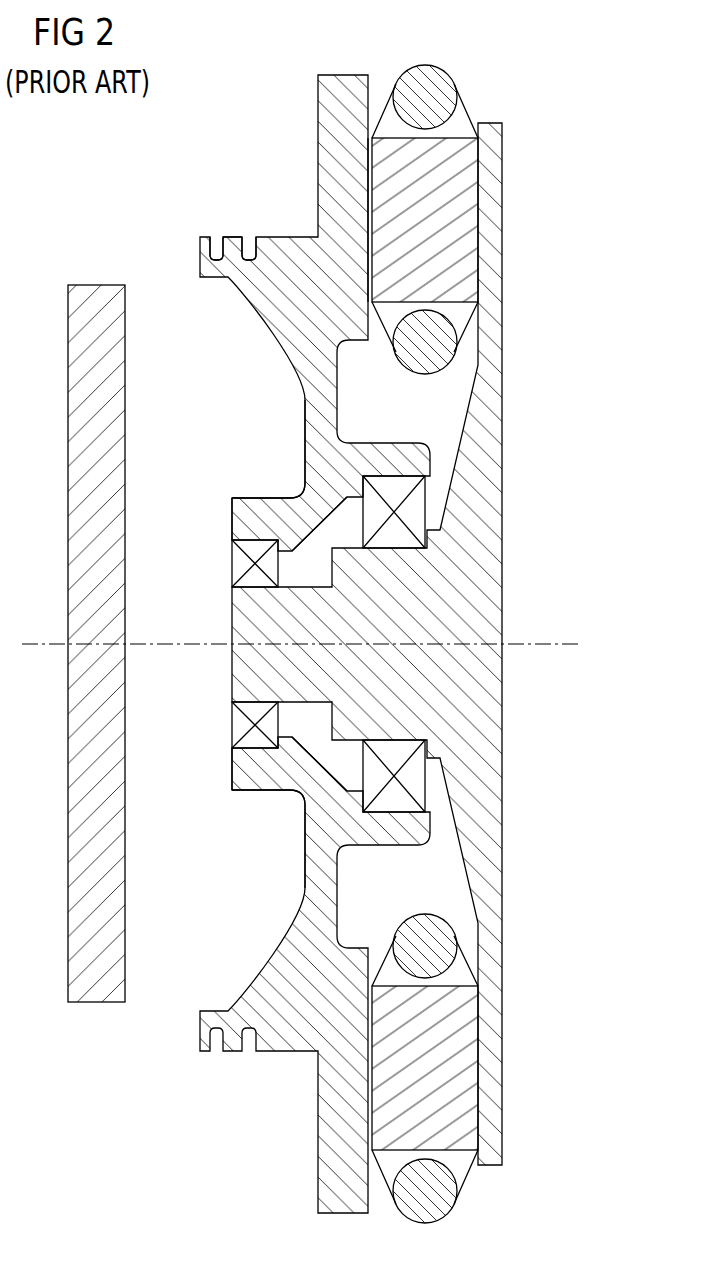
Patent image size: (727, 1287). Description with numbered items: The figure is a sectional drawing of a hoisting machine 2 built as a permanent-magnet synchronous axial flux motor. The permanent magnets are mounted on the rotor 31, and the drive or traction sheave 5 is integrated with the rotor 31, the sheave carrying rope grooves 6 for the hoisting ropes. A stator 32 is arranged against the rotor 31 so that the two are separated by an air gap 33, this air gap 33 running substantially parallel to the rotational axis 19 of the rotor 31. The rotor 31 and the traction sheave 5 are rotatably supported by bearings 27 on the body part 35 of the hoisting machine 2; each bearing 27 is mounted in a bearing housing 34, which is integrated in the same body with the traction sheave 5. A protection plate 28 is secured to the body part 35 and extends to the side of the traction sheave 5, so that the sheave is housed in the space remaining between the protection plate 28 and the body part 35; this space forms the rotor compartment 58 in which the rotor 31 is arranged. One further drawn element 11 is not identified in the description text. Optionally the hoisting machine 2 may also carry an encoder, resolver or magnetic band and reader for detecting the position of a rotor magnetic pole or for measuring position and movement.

The hoisting machine 2 is at (626, 703).
The drive sheave 5 is at (237, 250).
The rope grooves 6 is at (216, 253).
The hub of stator carrier 11 is at (253, 497).
The rotational axis 19 is at (570, 643).
The bearings 27 is at (240, 563).
The protection plate 28 is at (107, 302).
The rotor 31 is at (327, 105).
The stator 32 is at (460, 122).
The air gap 33 is at (368, 172).
The bearing housing 34 is at (333, 522).
The body part 35 is at (490, 717).
The rotor compartment 58 is at (166, 987).